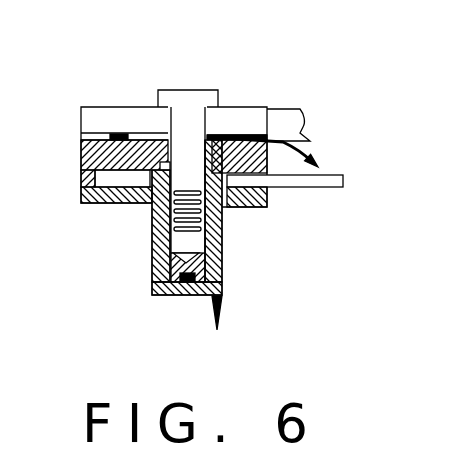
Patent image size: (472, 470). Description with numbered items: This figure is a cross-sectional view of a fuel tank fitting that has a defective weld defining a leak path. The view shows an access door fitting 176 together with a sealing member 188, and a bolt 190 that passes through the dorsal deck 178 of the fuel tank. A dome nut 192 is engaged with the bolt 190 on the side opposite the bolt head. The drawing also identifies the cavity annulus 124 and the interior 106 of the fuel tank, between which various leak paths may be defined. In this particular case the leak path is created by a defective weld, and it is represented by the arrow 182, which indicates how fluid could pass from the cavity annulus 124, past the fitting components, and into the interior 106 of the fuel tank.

The interior of the fuel tank 106 is at (340, 253).
The cavity annulus 124 is at (318, 157).
The access door fitting 176 is at (81, 197).
The dorsal deck 178 is at (244, 108).
The arrow 182 is at (222, 303).
The sealing member 188 is at (118, 132).
The bolt 190 is at (195, 90).
The dome nut 192 is at (152, 278).